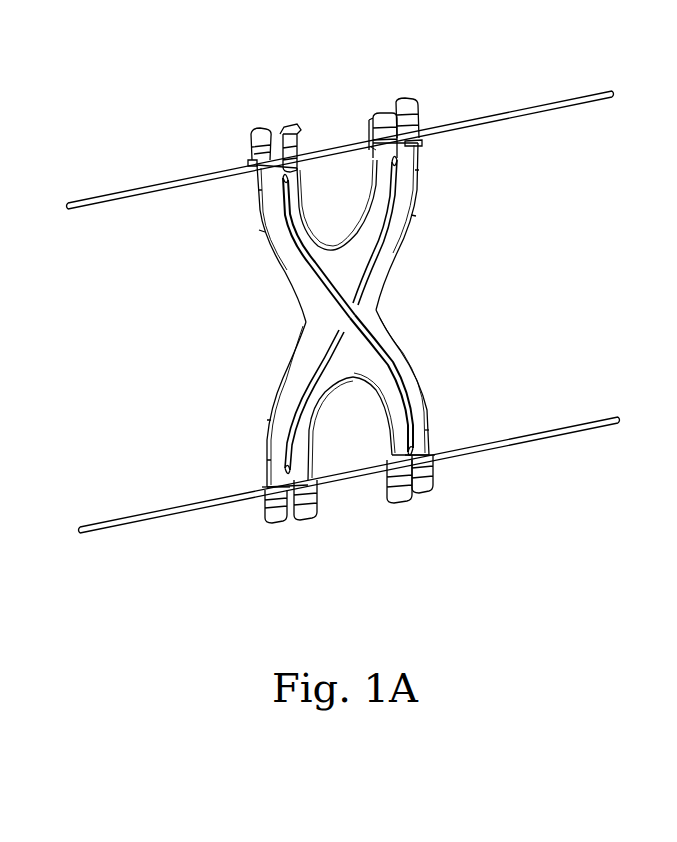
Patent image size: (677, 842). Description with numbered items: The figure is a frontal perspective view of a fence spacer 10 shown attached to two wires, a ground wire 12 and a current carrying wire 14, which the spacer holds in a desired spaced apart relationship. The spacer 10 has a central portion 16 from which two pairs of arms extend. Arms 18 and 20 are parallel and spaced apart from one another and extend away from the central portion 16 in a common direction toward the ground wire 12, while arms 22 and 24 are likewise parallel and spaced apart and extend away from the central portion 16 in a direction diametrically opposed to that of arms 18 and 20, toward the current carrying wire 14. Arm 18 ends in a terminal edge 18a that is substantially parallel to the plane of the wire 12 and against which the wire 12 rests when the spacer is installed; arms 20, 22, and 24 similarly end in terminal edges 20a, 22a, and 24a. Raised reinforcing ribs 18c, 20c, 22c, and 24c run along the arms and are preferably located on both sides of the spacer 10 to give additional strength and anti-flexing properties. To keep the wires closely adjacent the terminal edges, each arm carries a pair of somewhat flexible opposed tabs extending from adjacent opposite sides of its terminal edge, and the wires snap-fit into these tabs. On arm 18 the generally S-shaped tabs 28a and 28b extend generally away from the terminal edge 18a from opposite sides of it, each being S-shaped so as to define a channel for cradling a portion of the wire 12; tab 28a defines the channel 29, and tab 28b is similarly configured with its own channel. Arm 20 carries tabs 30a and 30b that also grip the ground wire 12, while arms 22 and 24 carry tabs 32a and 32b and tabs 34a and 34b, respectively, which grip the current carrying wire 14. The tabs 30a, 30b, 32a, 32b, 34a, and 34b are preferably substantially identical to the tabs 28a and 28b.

The fence spacer 10 is at (491, 302).
The ground wire 12 is at (526, 109).
The current carrying wire 14 is at (593, 426).
The central portion 16 is at (369, 318).
The arm 18 is at (421, 185).
The terminal edge 18a is at (421, 146).
The raised reinforcing rib 18c is at (395, 238).
The arm 20 is at (259, 215).
The terminal edge 20a is at (254, 160).
The raised reinforcing rib 20c is at (288, 238).
The arm 22 is at (422, 417).
The terminal edge 22a is at (425, 460).
The raised reinforcing rib 22c is at (384, 366).
The arm 24 is at (266, 452).
The terminal edge 24a is at (268, 503).
The raised reinforcing rib 24c is at (318, 382).
The S-shaped tab 28a is at (405, 98).
The S-shaped tab 28b is at (381, 112).
The channel 29 is at (378, 144).
The tab 30a is at (291, 127).
The tab 30b is at (258, 128).
The tab 32a is at (390, 500).
The tab 32b is at (425, 495).
The tab 34a is at (315, 520).
The tab 34b is at (280, 523).